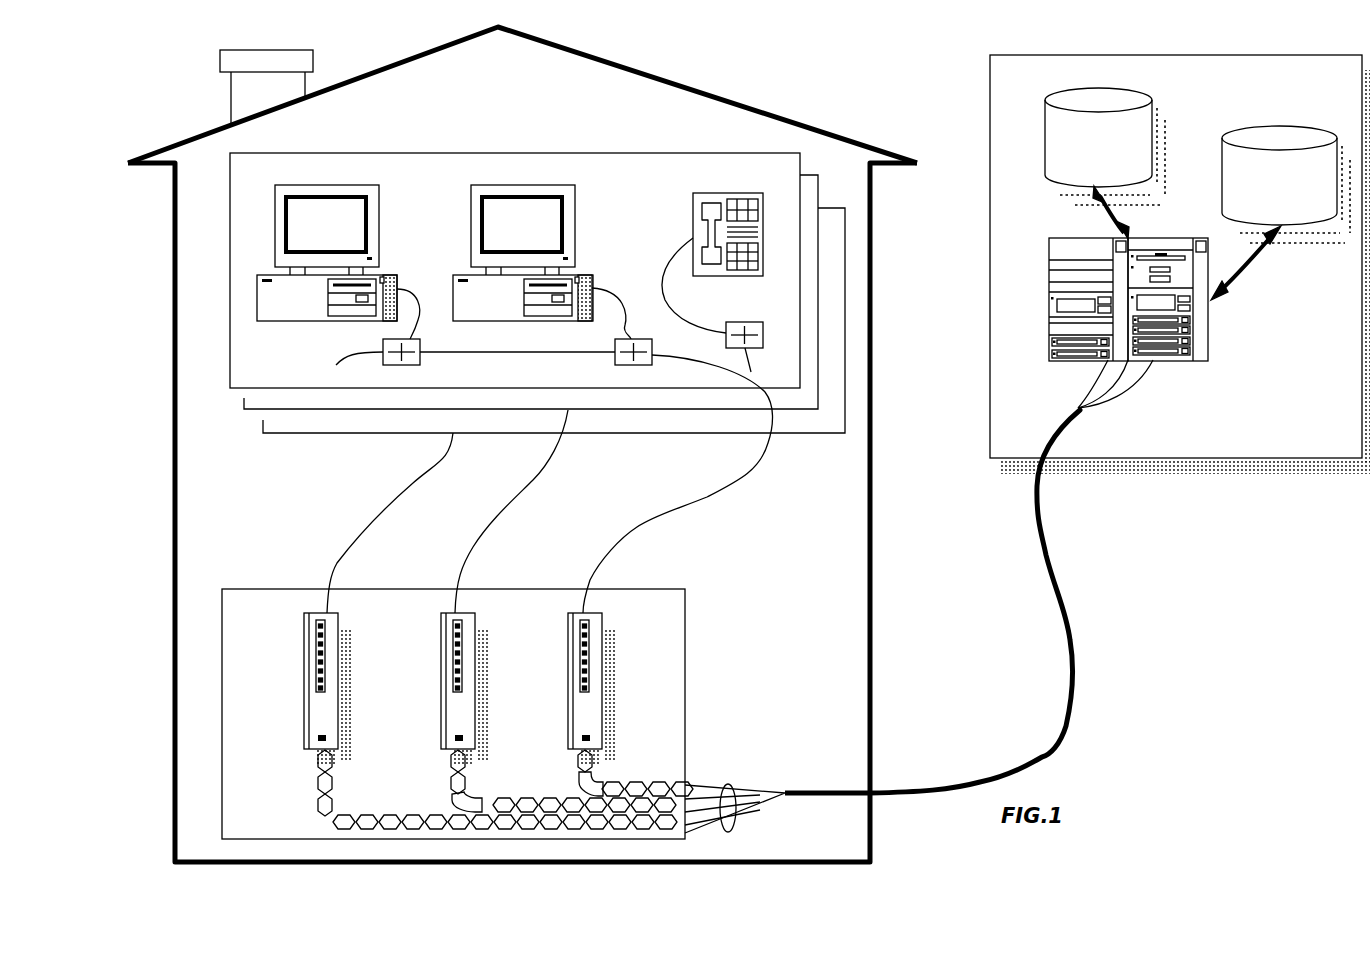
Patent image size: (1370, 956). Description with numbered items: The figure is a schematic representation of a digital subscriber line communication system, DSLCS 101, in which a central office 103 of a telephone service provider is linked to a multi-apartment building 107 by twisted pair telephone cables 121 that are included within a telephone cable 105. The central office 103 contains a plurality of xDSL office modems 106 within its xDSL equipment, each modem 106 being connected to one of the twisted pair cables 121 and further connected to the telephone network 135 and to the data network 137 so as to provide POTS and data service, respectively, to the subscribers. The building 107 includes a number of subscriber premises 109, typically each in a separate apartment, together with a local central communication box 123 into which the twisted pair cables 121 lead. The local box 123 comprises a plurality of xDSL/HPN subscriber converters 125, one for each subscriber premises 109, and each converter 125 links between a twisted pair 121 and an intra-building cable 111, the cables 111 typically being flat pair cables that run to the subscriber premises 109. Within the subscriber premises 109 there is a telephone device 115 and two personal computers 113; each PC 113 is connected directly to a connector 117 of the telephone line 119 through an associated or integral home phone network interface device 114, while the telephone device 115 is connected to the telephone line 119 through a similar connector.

The DSLCS 101 is at (1236, 745).
The central office 103 is at (988, 115).
The cable 105 is at (1051, 553).
The xDSL office modem 106 is at (1193, 318).
The multi-apartment building 107 is at (730, 117).
The subscriber premises 109 is at (290, 163).
The intra-building cable 111 is at (430, 476).
The personal computer 113 is at (374, 238).
The HPN interface device 114 is at (384, 275).
The telephone device 115 is at (725, 193).
The connector 117 is at (358, 359).
The telephone line 119 is at (477, 354).
The twisted pair telephone cable 121 is at (693, 787).
The local central communication box 123 is at (670, 672).
The xDSL/HPN subscriber converter 125 is at (304, 628).
The telephone network 135 is at (1286, 184).
The data network 137 is at (1105, 146).